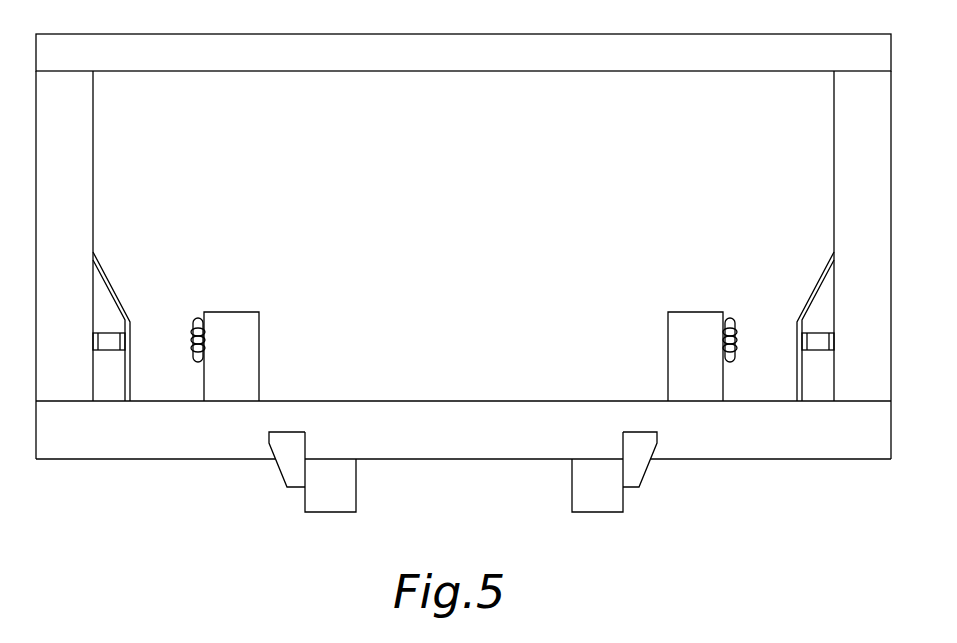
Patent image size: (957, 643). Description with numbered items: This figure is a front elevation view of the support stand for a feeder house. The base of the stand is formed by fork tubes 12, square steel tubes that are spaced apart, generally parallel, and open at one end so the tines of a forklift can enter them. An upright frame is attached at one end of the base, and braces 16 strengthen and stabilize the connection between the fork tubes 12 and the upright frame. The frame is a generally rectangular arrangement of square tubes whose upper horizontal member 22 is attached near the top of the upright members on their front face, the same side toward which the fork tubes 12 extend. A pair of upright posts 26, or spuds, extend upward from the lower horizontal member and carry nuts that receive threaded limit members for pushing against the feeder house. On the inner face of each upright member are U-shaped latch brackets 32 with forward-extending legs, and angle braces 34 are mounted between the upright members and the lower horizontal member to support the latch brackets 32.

The fork tubes 12 is at (330, 513).
The braces 16 is at (287, 470).
The upper horizontal member 22 is at (529, 37).
The upright posts 26 is at (248, 342).
The latch brackets 32 is at (107, 342).
The angle braces 34 is at (113, 283).